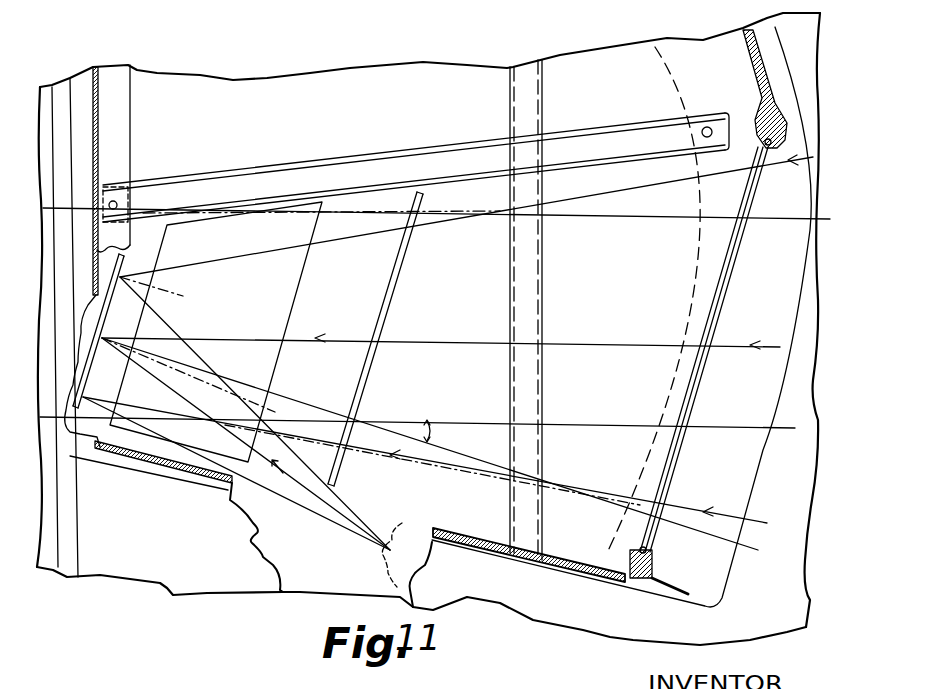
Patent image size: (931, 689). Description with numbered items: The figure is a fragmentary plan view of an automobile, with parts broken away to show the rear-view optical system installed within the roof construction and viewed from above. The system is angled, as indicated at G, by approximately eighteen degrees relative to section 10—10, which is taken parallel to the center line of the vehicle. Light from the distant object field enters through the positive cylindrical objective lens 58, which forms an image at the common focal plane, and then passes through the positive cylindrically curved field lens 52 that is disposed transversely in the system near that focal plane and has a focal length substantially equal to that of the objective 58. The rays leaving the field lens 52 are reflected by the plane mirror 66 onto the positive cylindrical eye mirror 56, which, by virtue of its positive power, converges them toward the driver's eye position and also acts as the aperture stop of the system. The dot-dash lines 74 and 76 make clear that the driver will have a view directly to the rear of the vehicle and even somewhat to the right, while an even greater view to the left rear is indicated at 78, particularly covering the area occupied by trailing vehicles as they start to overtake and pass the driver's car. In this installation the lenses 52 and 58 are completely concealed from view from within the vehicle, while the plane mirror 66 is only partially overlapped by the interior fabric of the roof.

The section line 10 is at (40, 400).
The field lens 52 is at (403, 265).
The eye mirror 56 is at (124, 268).
The objective lens 58 is at (720, 299).
The plane mirror 66 is at (302, 282).
The dot-dash line 74 is at (620, 344).
The dot-dash line 76 is at (672, 184).
The left rear view 78 is at (718, 512).
The angle G is at (434, 428).